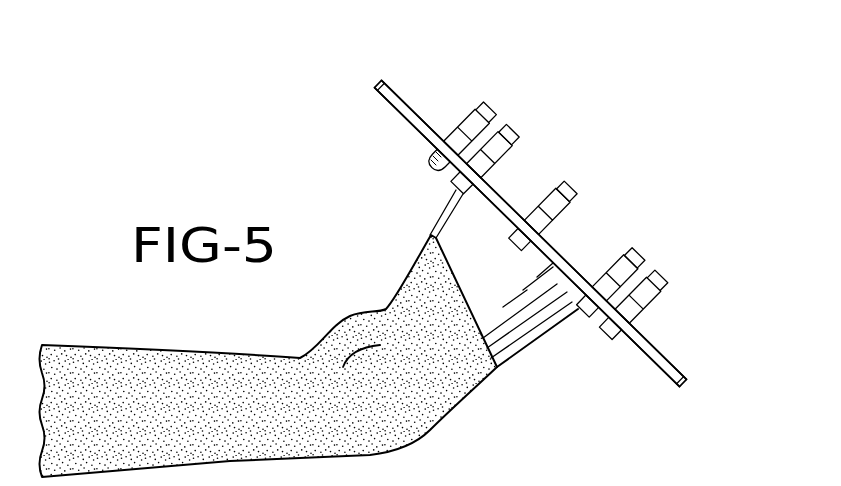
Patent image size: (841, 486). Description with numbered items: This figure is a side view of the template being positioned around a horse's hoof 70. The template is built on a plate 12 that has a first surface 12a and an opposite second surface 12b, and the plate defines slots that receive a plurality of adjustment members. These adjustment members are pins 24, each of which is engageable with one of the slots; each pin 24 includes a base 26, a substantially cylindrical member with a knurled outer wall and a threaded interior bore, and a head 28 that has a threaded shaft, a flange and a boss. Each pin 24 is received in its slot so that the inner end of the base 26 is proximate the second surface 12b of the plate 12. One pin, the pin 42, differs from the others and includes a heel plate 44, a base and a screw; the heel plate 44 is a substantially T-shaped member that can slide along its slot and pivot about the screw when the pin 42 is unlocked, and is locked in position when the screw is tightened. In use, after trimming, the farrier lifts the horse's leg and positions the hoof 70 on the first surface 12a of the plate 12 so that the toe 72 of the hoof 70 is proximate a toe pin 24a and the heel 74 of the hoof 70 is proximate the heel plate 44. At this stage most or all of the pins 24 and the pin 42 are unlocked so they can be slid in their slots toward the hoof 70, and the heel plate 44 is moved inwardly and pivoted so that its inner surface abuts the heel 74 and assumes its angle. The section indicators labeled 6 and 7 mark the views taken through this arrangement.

The section line for FIG. 6 is at (522, 78).
The section line for FIG. 7 is at (340, 140).
The plate 12 is at (687, 368).
The first surface 12a is at (650, 358).
The second surface 12b is at (665, 357).
The pin 24 is at (521, 124).
The toe pin 24a is at (660, 266).
The base 26 is at (500, 148).
The head 28 is at (456, 186).
The pin 42 is at (497, 99).
The heel plate 44 is at (430, 153).
The hoof 70 is at (535, 352).
The toe 72 is at (573, 340).
The heel 74 is at (468, 206).